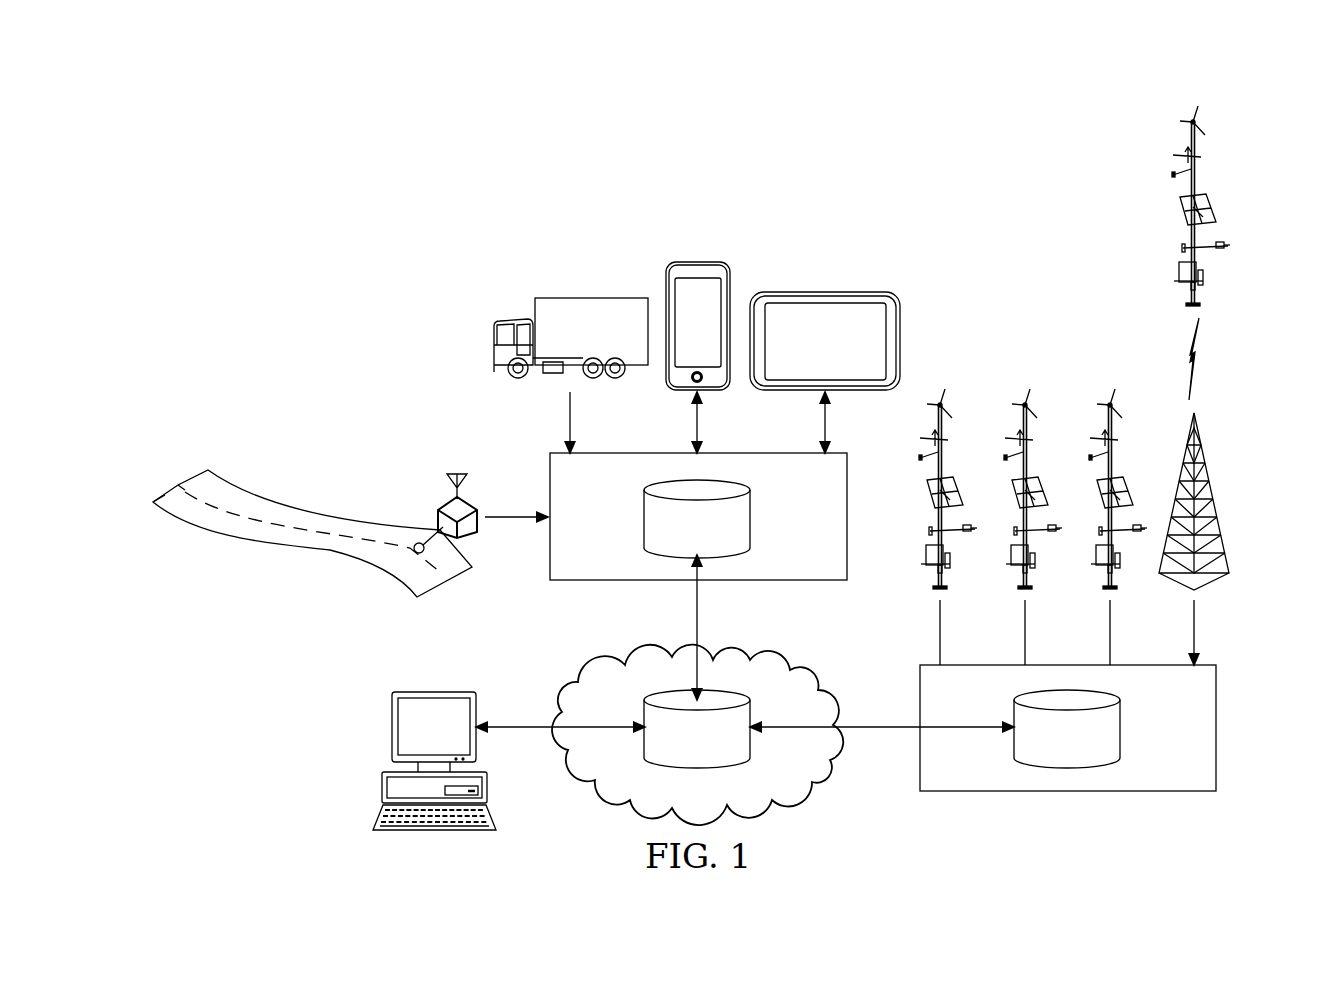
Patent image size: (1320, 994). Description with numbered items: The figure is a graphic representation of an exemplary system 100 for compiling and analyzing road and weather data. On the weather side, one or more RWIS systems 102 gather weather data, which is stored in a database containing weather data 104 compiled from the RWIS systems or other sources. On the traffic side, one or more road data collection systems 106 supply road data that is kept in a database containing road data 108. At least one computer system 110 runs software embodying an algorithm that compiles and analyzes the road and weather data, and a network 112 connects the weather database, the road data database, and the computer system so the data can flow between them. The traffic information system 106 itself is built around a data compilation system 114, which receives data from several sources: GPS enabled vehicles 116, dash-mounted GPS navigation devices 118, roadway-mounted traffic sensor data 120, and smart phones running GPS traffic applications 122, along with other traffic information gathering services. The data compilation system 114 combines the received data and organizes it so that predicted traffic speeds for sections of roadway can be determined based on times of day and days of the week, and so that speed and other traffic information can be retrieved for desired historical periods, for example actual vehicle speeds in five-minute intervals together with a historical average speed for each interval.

The system 100 is at (442, 123).
The RWIS systems 102 is at (1226, 132).
The database containing weather data 104 is at (1120, 728).
The road data collection systems 106 is at (880, 210).
The database containing road data 108 is at (645, 517).
The computer system 110 is at (432, 692).
The network 112 is at (752, 654).
The data compilation system 114 is at (698, 576).
The GPS enabled vehicles 116 is at (564, 298).
The dash-mounted GPS navigation devices 118 is at (836, 294).
The roadway-mounted traffic sensor data 120 is at (417, 542).
The smart phones running GPS traffic applications 122 is at (688, 262).